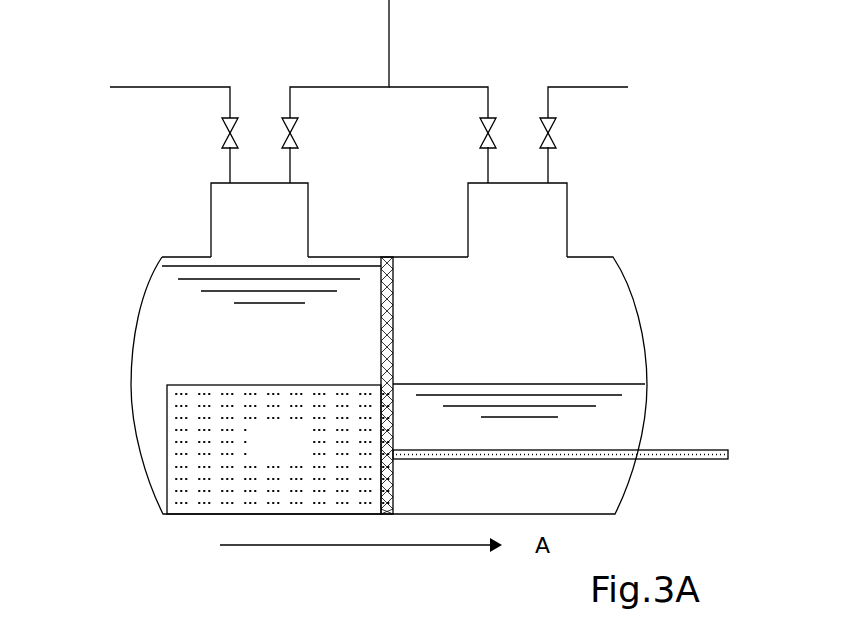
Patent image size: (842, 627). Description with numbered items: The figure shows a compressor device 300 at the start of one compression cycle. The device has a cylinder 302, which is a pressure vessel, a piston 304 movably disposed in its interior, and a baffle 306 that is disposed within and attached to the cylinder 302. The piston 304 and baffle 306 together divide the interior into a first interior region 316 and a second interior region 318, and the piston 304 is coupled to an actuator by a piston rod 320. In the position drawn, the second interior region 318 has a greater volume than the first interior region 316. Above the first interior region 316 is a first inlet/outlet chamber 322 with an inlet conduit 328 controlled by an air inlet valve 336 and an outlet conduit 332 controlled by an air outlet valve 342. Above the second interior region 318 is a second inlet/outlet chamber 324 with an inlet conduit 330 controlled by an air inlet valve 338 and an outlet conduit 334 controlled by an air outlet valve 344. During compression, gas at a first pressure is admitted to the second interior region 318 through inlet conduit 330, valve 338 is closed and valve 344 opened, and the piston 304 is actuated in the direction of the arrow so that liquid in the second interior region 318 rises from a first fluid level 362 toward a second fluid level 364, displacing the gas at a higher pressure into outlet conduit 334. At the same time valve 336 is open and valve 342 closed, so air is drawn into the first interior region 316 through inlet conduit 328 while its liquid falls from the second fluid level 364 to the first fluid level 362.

The compressor device 300 is at (736, 94).
The cylinder 302 is at (140, 458).
The piston 304 is at (290, 456).
The baffle 306 is at (384, 258).
The first interior region 316 is at (172, 360).
The second interior region 318 is at (627, 310).
The piston rod 320 is at (678, 452).
The first inlet/outlet chamber 322 is at (243, 216).
The second inlet/outlet chamber 324 is at (556, 219).
The inlet conduit 328 is at (146, 87).
The inlet conduit 330 is at (598, 87).
The outlet conduit 332 is at (300, 87).
The outlet conduit 334 is at (465, 87).
The air inlet valve 336 is at (229, 133).
The air inlet valve 338 is at (549, 133).
The air outlet valve 342 is at (291, 133).
The air outlet valve 344 is at (487, 133).
The first fluid level 362 is at (608, 382).
The second fluid level 364 is at (230, 265).